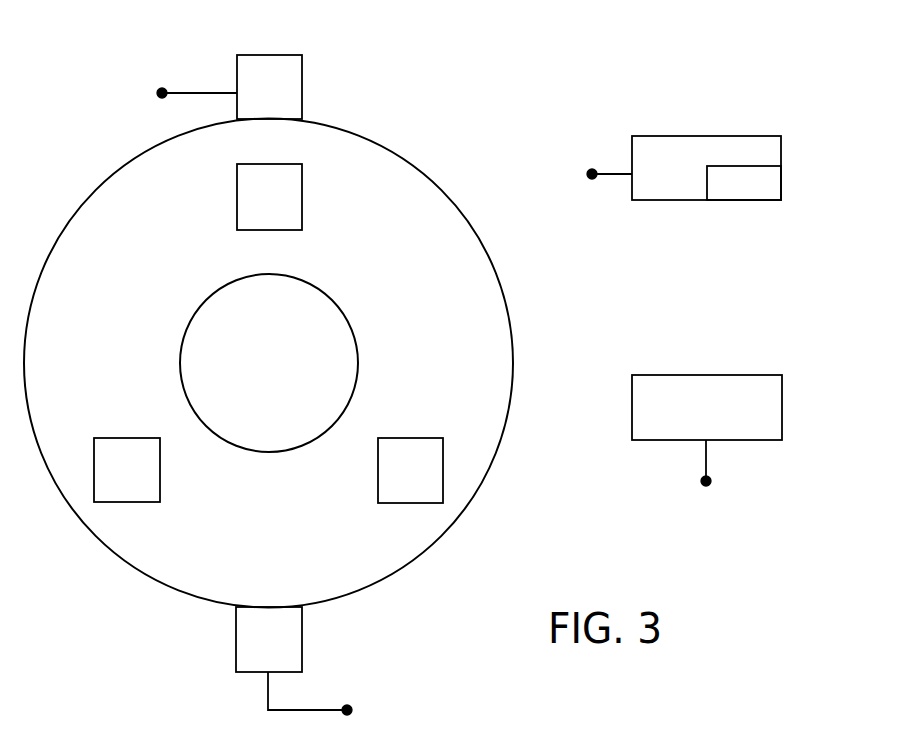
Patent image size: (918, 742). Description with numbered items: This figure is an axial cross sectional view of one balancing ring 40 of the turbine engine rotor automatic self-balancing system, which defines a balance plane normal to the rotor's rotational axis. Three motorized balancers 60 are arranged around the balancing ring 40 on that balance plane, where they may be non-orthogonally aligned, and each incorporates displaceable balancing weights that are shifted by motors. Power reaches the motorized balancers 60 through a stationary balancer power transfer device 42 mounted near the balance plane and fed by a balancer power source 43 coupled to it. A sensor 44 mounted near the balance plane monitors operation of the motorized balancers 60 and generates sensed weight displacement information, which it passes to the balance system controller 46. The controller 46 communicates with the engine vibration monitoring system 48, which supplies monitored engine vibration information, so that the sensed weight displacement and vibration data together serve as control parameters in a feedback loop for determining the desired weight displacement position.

The balancing ring 40 is at (458, 164).
The balancer power transfer device 42 is at (302, 633).
The balancer power source 43 is at (698, 385).
The sensor 44 is at (290, 88).
The balance system controller 46 is at (697, 157).
The vibration monitoring system (VMS) 48 is at (760, 193).
The motorized balancer 60 is at (282, 185).